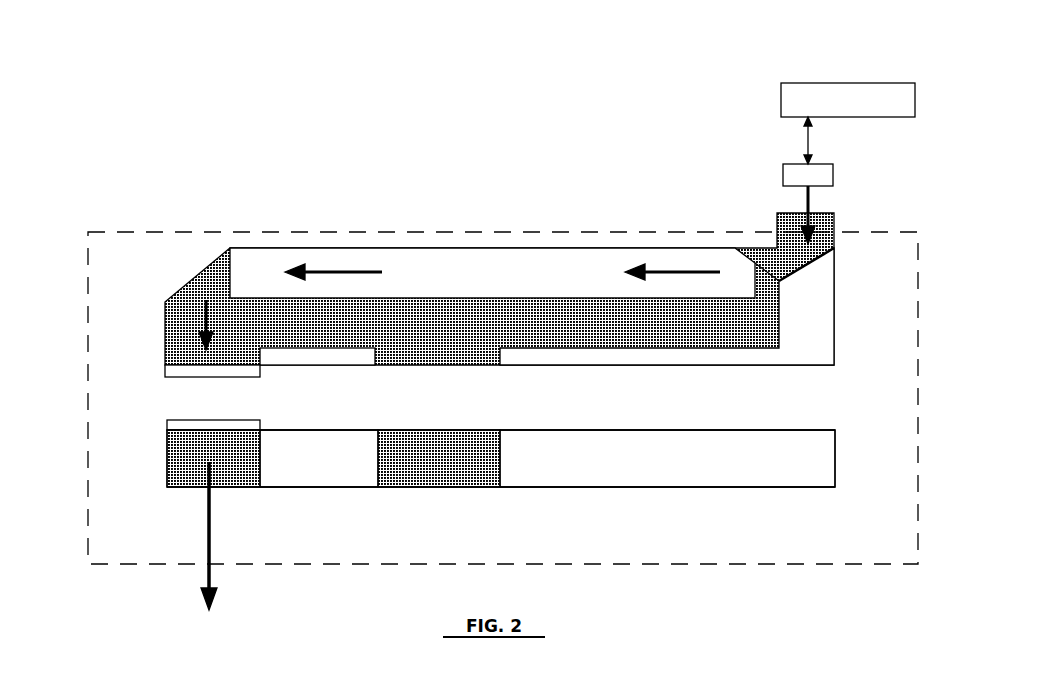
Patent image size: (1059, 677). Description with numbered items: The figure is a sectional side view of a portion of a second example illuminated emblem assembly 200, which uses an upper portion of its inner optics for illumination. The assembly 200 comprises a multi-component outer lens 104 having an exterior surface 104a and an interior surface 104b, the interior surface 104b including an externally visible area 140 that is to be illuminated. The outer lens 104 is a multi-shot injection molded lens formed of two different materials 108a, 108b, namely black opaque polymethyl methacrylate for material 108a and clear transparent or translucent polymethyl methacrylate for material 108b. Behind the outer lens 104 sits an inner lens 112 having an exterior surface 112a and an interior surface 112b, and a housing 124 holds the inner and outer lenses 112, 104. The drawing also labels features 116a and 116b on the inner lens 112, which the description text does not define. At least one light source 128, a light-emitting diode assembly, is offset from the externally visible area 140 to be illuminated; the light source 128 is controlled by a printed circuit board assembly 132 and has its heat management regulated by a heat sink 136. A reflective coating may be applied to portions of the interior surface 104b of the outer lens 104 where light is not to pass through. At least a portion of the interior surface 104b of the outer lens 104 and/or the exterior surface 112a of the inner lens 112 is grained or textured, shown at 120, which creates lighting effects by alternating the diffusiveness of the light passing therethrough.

The second example illuminated emblem assembly 200 is at (182, 148).
The multi-component outer lens 104 is at (452, 468).
The exterior surface 104a is at (810, 487).
The interior surface 104b is at (810, 430).
The black PMMA material 108a is at (245, 477).
The clear PMMA material 108b is at (317, 477).
The inner lens 112 is at (450, 294).
The exterior surface 112a is at (810, 365).
The interior surface 112b is at (784, 284).
The fluid inlet channel 116a is at (218, 267).
The fluid outlet channels 116b is at (363, 357).
The grained or textured surface portion 120 is at (263, 378).
The housing 124 is at (477, 232).
The light source 128 is at (783, 178).
The printed circuit board assembly 132 is at (791, 87).
The heat sink 136 is at (781, 100).
The externally visible area 140 is at (207, 550).